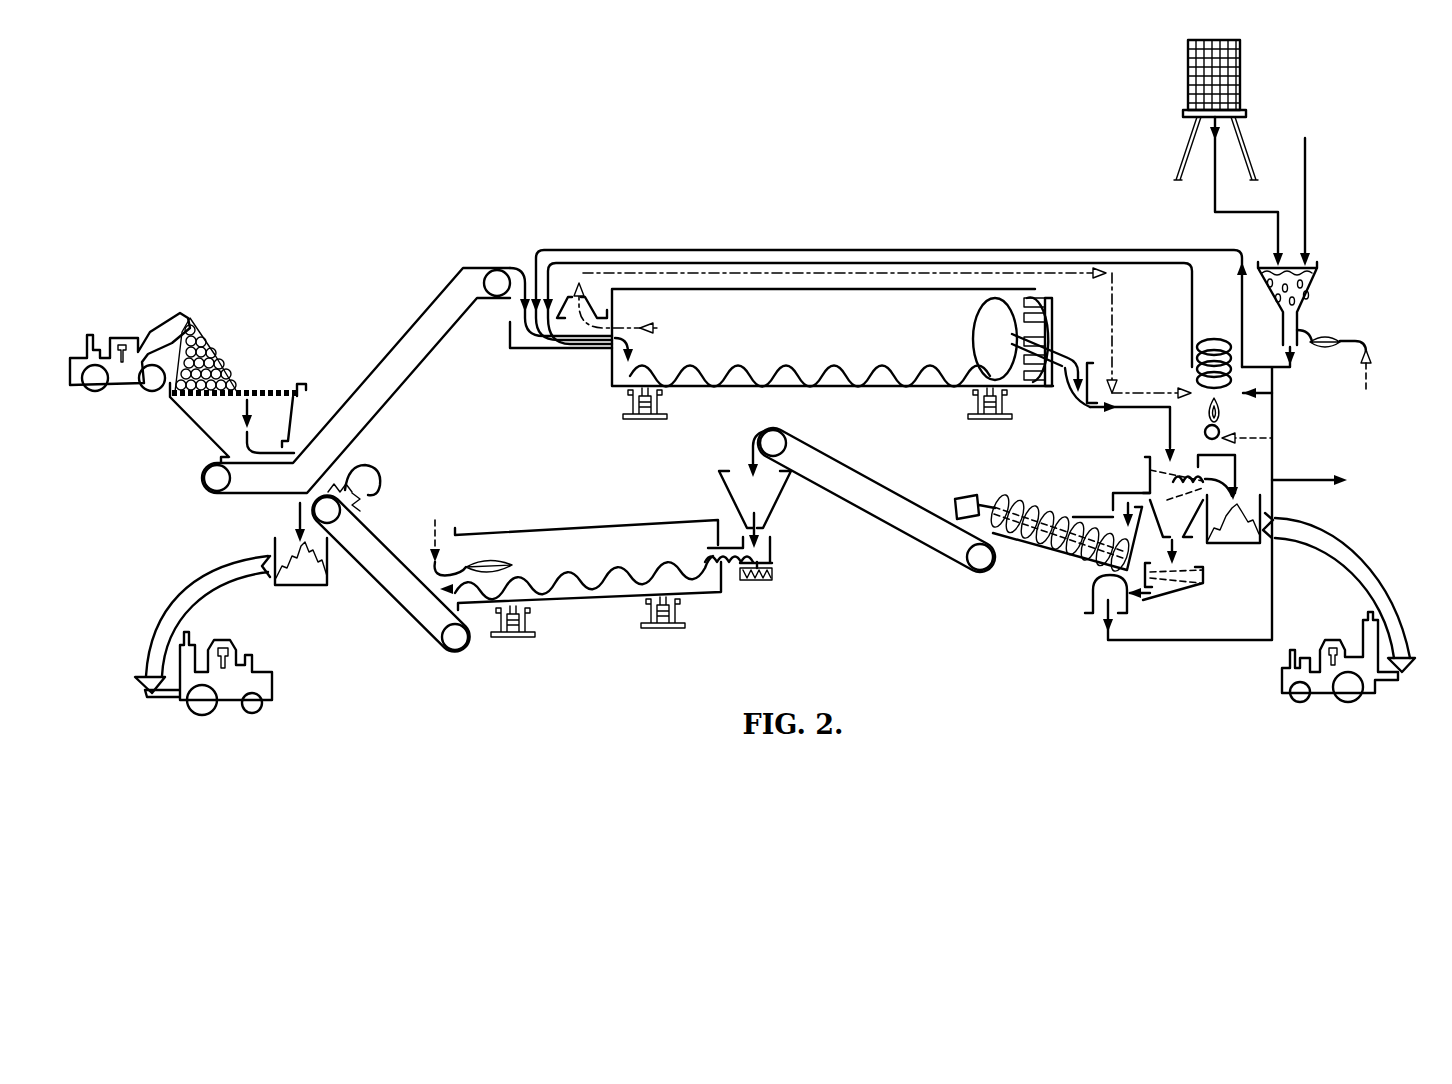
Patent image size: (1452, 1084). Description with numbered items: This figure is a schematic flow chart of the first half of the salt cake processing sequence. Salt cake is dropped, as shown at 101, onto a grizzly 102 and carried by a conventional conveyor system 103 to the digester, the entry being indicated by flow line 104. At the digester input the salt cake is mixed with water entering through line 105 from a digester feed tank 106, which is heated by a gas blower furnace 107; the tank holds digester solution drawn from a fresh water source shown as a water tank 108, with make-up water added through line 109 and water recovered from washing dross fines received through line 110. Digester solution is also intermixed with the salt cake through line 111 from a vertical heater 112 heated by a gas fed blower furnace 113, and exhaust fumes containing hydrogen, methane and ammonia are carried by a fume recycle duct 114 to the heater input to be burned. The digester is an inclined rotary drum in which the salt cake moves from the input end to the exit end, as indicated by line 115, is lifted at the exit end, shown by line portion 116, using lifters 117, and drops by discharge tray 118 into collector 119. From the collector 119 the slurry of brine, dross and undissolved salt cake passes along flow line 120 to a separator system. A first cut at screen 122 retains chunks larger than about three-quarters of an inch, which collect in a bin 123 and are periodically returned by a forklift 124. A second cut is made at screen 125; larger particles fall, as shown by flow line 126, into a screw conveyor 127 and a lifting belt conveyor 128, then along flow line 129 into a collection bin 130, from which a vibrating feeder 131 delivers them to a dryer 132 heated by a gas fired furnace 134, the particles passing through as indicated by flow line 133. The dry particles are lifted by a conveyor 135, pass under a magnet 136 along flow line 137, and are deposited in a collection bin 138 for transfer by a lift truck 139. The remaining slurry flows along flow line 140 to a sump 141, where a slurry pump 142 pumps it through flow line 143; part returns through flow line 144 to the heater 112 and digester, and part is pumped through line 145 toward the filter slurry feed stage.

The salt cake drop 101 is at (208, 320).
The grizzly 102 is at (267, 390).
The conveyor system 103 is at (390, 394).
The flow line 104 is at (477, 266).
The line 105 is at (586, 250).
The digester feed tank 106 is at (1318, 302).
The gas blower furnace 107 is at (1363, 341).
The water tank 108 is at (1188, 78).
The line 109 is at (1210, 192).
The line 110 is at (1307, 220).
The line 111 is at (699, 262).
The vertical heater 112 is at (1195, 368).
The gas fed blower furnace 113 is at (1222, 432).
The fume recycle duct 114 is at (1118, 296).
The line 115 is at (795, 366).
The line portion 116 is at (975, 330).
The lifters 117 is at (1033, 300).
The discharge tray 118 is at (1052, 338).
The collector 119 is at (1078, 412).
The flow line 120 is at (1158, 407).
The screen 122 is at (1163, 468).
The bin 123 is at (1247, 496).
The forklift 124 is at (1395, 680).
The screen 125 is at (1156, 500).
The flow line 126 is at (1112, 493).
The screw conveyor 127 is at (1020, 492).
The lifting belt conveyor 128 is at (897, 497).
The flow line 129 is at (828, 455).
The collection bin 130 is at (718, 474).
The vibrating feeder 131 is at (772, 562).
The dryer 132 is at (606, 520).
The flow line 133 is at (592, 577).
The gas fired furnace 134 is at (470, 560).
The conveyor 135 is at (393, 550).
The magnet 136 is at (378, 470).
The flow line 137 is at (300, 508).
The collection bin 138 is at (305, 590).
The lift truck 139 is at (160, 700).
The flow line 140 is at (1182, 553).
The sump 141 is at (1178, 592).
The slurry pump 142 is at (1092, 592).
The flow line 143 is at (1160, 640).
The flow line 144 is at (1274, 450).
The line 145 is at (1300, 483).